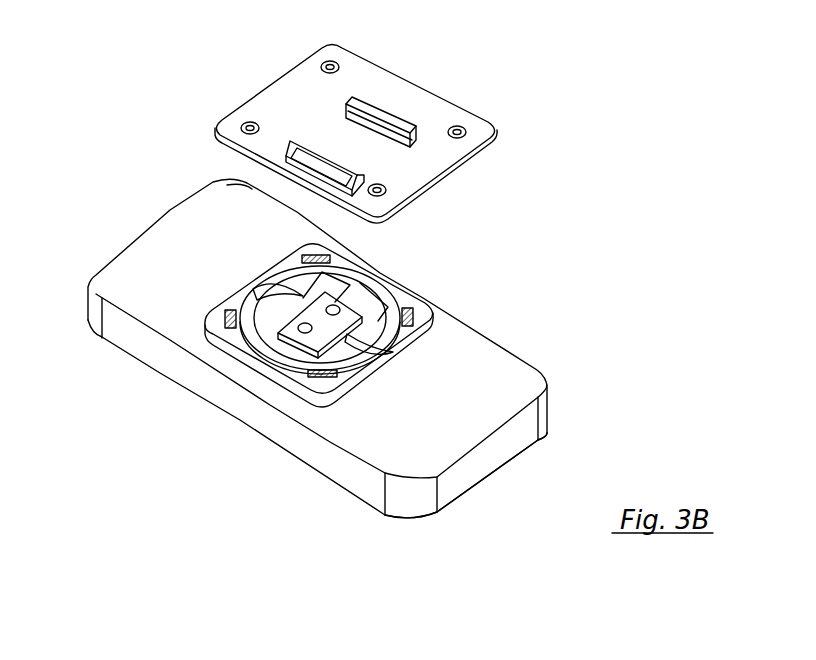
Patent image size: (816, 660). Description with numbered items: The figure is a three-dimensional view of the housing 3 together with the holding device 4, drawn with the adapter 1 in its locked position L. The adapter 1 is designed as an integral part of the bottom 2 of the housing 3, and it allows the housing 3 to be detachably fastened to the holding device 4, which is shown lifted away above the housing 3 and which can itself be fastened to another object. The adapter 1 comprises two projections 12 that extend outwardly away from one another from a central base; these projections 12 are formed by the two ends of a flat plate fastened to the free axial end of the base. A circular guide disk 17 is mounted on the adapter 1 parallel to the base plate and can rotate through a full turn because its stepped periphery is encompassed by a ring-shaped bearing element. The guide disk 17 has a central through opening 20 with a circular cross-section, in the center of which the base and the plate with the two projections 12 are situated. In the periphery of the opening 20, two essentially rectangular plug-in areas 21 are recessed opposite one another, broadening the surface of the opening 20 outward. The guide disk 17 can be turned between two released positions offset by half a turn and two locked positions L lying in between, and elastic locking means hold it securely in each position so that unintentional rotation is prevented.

The adapter 1 is at (250, 268).
The bottom 2 is at (124, 258).
The housing 3 is at (500, 455).
The holding device 4 is at (437, 90).
The projections 12 is at (347, 305).
The guide disk 17 is at (397, 320).
The central through opening 20 is at (278, 288).
The plug-in areas 21 is at (405, 282).
The locked position L is at (398, 267).